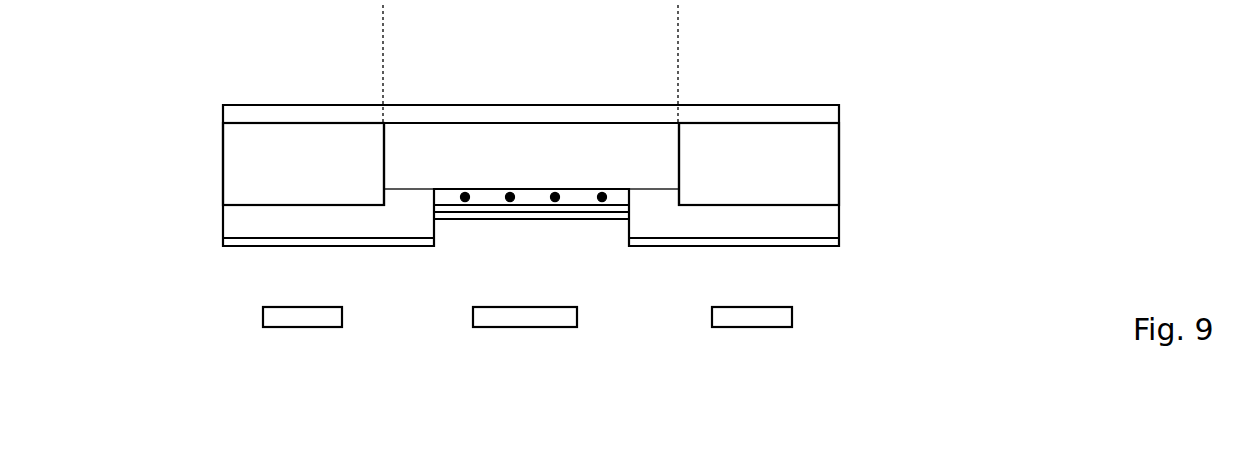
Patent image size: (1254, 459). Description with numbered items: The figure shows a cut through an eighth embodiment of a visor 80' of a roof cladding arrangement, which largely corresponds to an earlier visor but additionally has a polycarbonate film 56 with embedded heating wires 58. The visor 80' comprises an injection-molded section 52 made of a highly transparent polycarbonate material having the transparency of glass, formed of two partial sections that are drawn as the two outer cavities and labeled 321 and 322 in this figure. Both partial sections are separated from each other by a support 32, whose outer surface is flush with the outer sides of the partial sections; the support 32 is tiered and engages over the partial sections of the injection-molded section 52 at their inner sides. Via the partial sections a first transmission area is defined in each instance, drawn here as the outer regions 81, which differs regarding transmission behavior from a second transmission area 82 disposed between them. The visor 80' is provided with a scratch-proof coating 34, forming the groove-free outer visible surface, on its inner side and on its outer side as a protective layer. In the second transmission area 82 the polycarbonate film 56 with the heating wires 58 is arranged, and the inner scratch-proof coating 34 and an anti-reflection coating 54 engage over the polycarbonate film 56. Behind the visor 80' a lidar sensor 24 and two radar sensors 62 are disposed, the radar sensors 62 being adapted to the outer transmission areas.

The visor 80' is at (638, 151).
The support 32 is at (842, 176).
The right cavity 321 is at (790, 150).
The left cavity 322 is at (257, 177).
The injection-molded section 52 is at (404, 162).
The scratch-proof coating 34 is at (263, 112).
The polycarbonate film 56 is at (568, 195).
The anti-reflection coating 54 is at (588, 215).
The heating wires 58 is at (465, 200).
The outer region 81 is at (318, 64).
The second transmission area 82 is at (545, 65).
The radar sensors 62 is at (295, 313).
The lidar sensor 24 is at (508, 313).